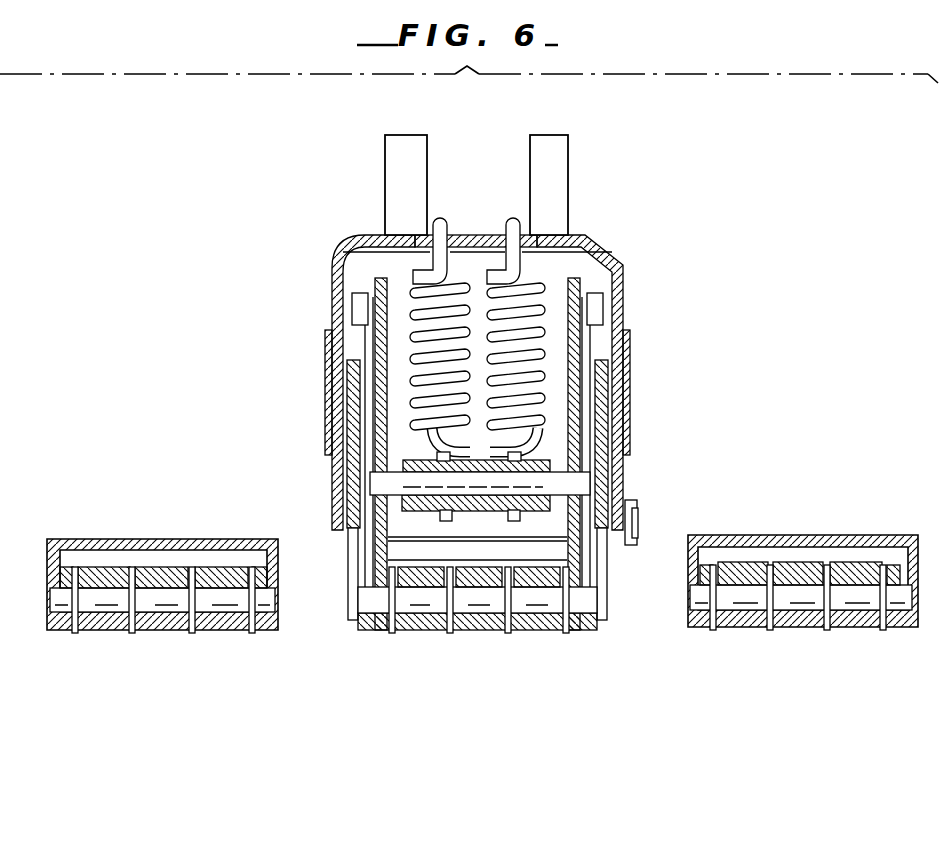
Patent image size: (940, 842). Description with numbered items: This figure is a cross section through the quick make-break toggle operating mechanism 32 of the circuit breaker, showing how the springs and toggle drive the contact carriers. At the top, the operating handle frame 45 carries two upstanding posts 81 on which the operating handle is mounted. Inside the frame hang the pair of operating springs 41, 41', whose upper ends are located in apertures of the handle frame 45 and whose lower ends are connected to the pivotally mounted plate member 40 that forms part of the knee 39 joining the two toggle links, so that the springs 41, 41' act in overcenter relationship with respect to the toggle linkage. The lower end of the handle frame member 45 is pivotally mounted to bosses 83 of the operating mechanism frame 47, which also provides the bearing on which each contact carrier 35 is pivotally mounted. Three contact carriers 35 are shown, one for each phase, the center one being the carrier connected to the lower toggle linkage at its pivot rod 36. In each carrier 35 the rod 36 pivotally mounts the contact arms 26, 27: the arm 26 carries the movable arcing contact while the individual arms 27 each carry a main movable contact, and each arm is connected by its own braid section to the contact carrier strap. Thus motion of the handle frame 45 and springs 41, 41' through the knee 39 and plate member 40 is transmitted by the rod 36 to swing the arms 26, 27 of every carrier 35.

The quick make-break toggle operating mechanism 32 is at (608, 220).
The operating handle frame 45 is at (610, 252).
The upstanding posts 81 is at (540, 160).
The operating spring 41 is at (444, 335).
The operating spring 41' is at (522, 335).
The operating mechanism frame 47 is at (600, 417).
The bosses 83 is at (628, 525).
The knee 39 is at (480, 490).
The plate member 40 is at (540, 497).
The contact carrier 35 is at (360, 628).
The rod 36 is at (425, 598).
The contact arm 26 is at (505, 612).
The contact arm 27 is at (438, 620).